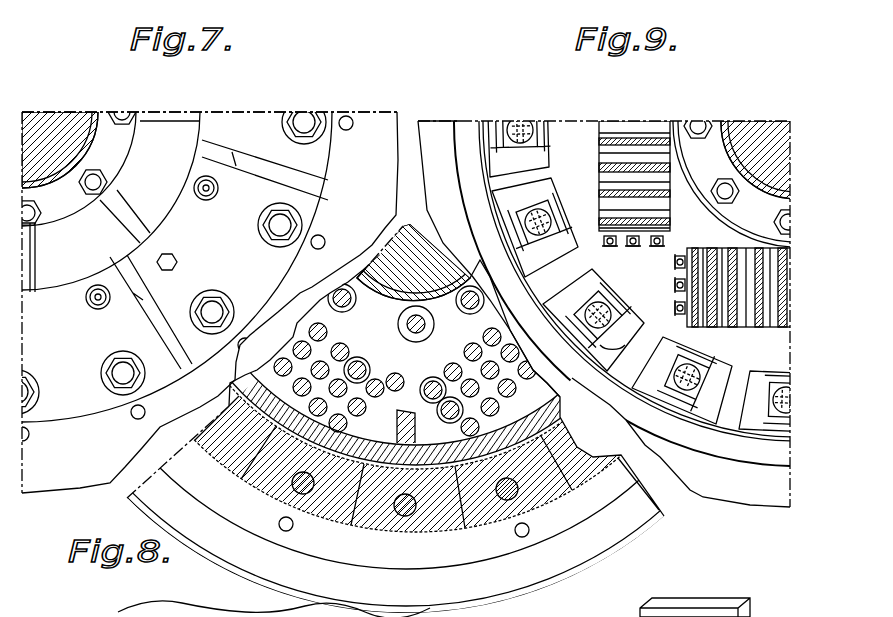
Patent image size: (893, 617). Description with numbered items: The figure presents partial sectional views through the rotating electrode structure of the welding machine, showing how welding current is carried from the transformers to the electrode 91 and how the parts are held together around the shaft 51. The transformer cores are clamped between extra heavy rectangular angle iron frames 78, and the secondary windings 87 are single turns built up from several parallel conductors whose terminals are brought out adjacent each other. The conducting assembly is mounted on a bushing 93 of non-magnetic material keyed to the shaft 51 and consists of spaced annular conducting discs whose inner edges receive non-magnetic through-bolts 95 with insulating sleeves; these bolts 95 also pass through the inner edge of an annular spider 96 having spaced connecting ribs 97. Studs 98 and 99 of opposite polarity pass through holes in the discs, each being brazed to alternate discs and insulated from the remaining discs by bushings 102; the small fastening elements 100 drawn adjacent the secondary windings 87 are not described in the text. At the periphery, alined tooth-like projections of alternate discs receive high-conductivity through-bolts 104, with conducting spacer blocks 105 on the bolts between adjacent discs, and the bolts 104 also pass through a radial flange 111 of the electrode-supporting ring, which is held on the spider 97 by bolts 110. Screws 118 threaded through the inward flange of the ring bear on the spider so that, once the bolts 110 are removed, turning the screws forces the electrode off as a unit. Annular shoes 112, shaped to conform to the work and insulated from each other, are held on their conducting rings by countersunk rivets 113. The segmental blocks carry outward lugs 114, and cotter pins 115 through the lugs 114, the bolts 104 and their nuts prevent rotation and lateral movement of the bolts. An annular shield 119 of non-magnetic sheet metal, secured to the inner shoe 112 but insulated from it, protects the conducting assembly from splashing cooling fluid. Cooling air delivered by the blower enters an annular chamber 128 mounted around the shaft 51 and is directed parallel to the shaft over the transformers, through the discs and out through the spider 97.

In FIG. 7, the shaft 51 is at (45, 118).
In FIG. 8, the shaft 51 is at (398, 240).
In FIG. 9, the shaft 51 is at (752, 128).
In FIG. 7, the annular spider 96 is at (105, 125).
In FIG. 7, the connecting ribs 97 is at (156, 135).
In FIG. 8, the connecting ribs 97 is at (409, 408).
In FIG. 7, the through-bolts 95 is at (96, 178).
In FIG. 8, the through-bolts 95 is at (420, 325).
In FIG. 9, the through-bolts 95 is at (735, 200).
In FIG. 7, the bolts 110 is at (216, 189).
In FIG. 7, the radial flange 111 is at (300, 193).
In FIG. 7, the screws 118 is at (176, 260).
In FIG. 7, the through-bolts 104 is at (120, 376).
In FIG. 8, the through-bolts 104 is at (410, 500).
In FIG. 9, the through-bolts 104 is at (595, 305).
In FIG. 7, the countersunk rivets 113 is at (133, 416).
In FIG. 8, the countersunk rivets 113 is at (282, 532).
In FIG. 7, the annular shoes 112 is at (362, 122).
In FIG. 7, the annular shield 119 is at (477, 124).
In FIG. 9, the annular shield 119 is at (673, 233).
In FIG. 8, the studs 98 is at (346, 352).
In FIG. 8, the studs 99 is at (372, 364).
In FIG. 8, the bushings 102 is at (433, 380).
In FIG. 8, the spacer blocks 105 is at (372, 532).
In FIG. 8, the electrode 91 is at (560, 556).
In FIG. 8, the annular chamber 128 is at (200, 608).
In FIG. 9, the bushing 93 is at (710, 125).
In FIG. 9, the secondary windings 87 is at (597, 165).
In FIG. 9, the screws 100 is at (668, 260).
In FIG. 9, the cotter pins 115 is at (640, 306).
In FIG. 9, the lugs 114 is at (606, 330).
In FIG. 9, the rectangular angle iron frames 78 is at (686, 604).